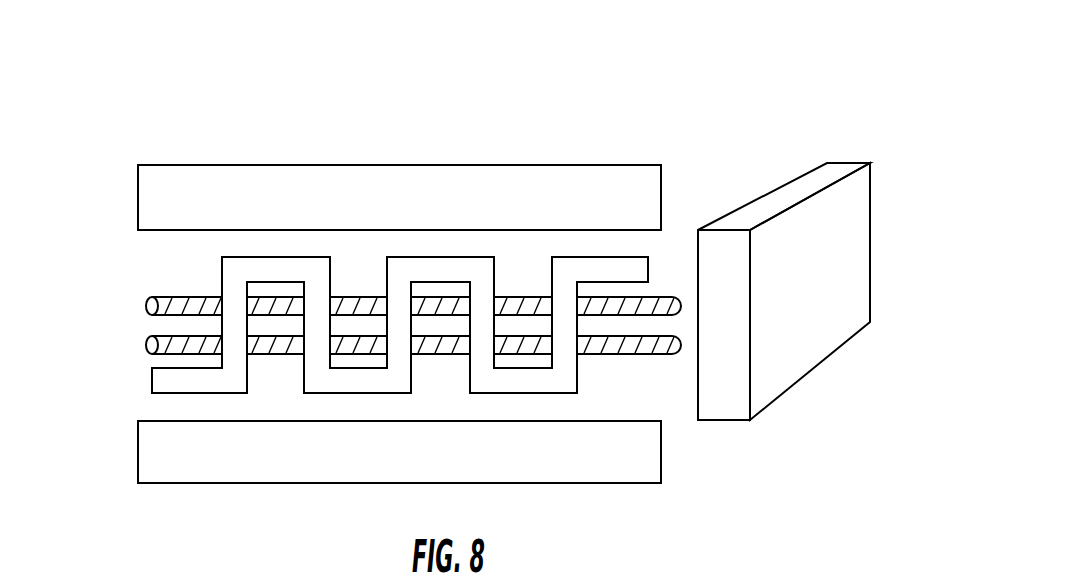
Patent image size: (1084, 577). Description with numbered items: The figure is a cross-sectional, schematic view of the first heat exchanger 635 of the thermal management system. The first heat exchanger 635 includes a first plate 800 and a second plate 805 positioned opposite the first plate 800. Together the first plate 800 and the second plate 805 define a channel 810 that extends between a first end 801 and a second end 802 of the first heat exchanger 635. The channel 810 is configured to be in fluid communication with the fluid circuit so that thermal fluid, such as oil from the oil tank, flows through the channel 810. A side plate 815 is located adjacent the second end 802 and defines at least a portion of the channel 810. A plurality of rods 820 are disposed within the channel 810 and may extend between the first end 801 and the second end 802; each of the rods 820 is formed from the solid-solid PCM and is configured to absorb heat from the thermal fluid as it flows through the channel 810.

The first heat exchanger 635 is at (723, 67).
The first end 801 is at (85, 262).
The second end 802 is at (893, 235).
The first plate 800 is at (568, 190).
The second plate 805 is at (245, 470).
The channel 810 is at (358, 262).
The side plate 815 is at (790, 228).
The plurality of rods 820 is at (146, 345).